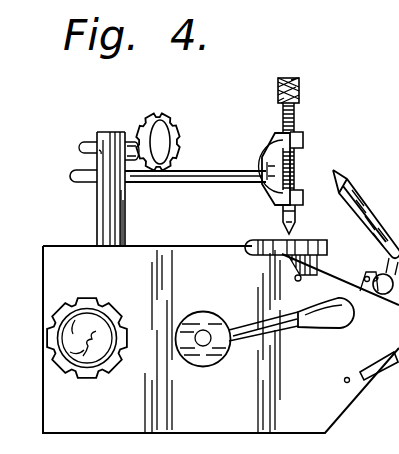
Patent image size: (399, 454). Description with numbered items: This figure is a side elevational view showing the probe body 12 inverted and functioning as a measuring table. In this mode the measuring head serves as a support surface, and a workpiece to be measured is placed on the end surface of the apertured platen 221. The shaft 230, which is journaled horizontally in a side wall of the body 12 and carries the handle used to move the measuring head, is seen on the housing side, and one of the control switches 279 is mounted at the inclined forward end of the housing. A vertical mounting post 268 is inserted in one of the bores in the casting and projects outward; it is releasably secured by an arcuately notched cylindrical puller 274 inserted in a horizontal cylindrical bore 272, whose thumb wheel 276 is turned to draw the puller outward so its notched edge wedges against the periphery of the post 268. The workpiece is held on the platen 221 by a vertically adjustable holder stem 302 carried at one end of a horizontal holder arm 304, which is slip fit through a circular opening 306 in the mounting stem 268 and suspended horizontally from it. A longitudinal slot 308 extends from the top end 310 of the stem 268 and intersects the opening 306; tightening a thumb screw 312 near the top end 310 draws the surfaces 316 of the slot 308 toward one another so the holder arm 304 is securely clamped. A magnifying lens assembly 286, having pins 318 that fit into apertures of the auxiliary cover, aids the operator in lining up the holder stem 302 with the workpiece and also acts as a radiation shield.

The probe body 12 is at (57, 244).
The apertured platen 221 is at (283, 233).
The shaft 230 is at (207, 330).
The vertical mounting post 268 is at (124, 219).
The cylindrical bore 272 is at (106, 309).
The cylindrical puller 274 is at (81, 371).
The thumb wheel 276 is at (84, 298).
The control switch 279 is at (364, 379).
The magnifying lens assembly 286 is at (354, 212).
The holder stem 302 is at (299, 112).
The horizontal holder arm 304 is at (236, 169).
The circular opening 306 is at (105, 187).
The longitudinal slot 308 is at (99, 137).
The top end 310 is at (113, 130).
The thumb screw 312 is at (154, 119).
The surfaces of slot 316 is at (97, 156).
The pin 318 is at (374, 311).